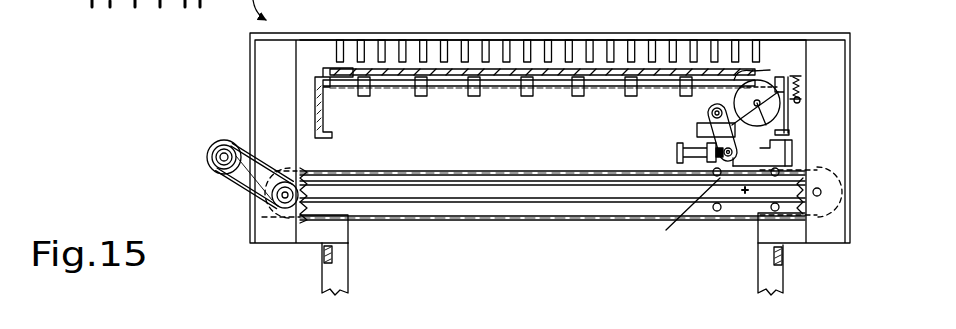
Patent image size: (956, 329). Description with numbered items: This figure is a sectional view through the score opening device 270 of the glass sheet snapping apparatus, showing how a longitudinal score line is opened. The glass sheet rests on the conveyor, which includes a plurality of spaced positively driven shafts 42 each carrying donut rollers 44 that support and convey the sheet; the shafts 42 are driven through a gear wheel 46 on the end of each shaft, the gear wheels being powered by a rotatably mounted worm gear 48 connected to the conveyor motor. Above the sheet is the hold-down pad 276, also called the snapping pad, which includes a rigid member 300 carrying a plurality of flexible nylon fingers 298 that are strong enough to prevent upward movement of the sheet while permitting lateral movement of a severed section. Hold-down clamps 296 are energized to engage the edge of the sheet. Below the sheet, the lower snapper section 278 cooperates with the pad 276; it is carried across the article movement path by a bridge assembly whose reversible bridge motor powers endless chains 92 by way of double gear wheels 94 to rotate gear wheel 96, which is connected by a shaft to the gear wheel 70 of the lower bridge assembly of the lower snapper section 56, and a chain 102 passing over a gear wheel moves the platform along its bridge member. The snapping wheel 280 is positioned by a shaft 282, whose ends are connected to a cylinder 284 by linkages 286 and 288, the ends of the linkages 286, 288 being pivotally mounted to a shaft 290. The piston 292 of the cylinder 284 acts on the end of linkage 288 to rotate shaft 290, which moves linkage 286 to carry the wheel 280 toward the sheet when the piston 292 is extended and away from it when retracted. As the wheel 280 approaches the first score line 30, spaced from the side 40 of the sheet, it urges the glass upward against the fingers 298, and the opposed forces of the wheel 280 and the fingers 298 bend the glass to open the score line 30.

The sorting apparatus frame 270 is at (228, 80).
The hold-down pad 276 is at (312, 28).
The rigid member 300 is at (458, 40).
The flexible fingers 298 is at (484, 55).
The first score line 30 is at (374, 70).
The positively driven shafts 42 is at (497, 92).
The donut rollers 44 is at (477, 97).
The hold-down clamps 296 is at (323, 70).
The double gear wheels 94 is at (216, 172).
The endless chains 92 is at (262, 170).
The gear wheel 96 is at (256, 200).
The chain 102 is at (511, 171).
The gear wheel 70 is at (312, 224).
The lower snapper section 56 is at (378, 240).
The shaft 282 is at (775, 123).
The side of the glass sheet 40 is at (753, 73).
The gear wheel 46 is at (800, 89).
The worm gear 48 is at (799, 101).
The shaft 290 is at (711, 115).
The linkage 288 is at (697, 130).
The cylinder 284 is at (677, 153).
The linkage 286 is at (746, 126).
The snapping wheel 280 is at (786, 148).
The piston 292 is at (668, 230).
The lower snapper section 278 is at (689, 230).